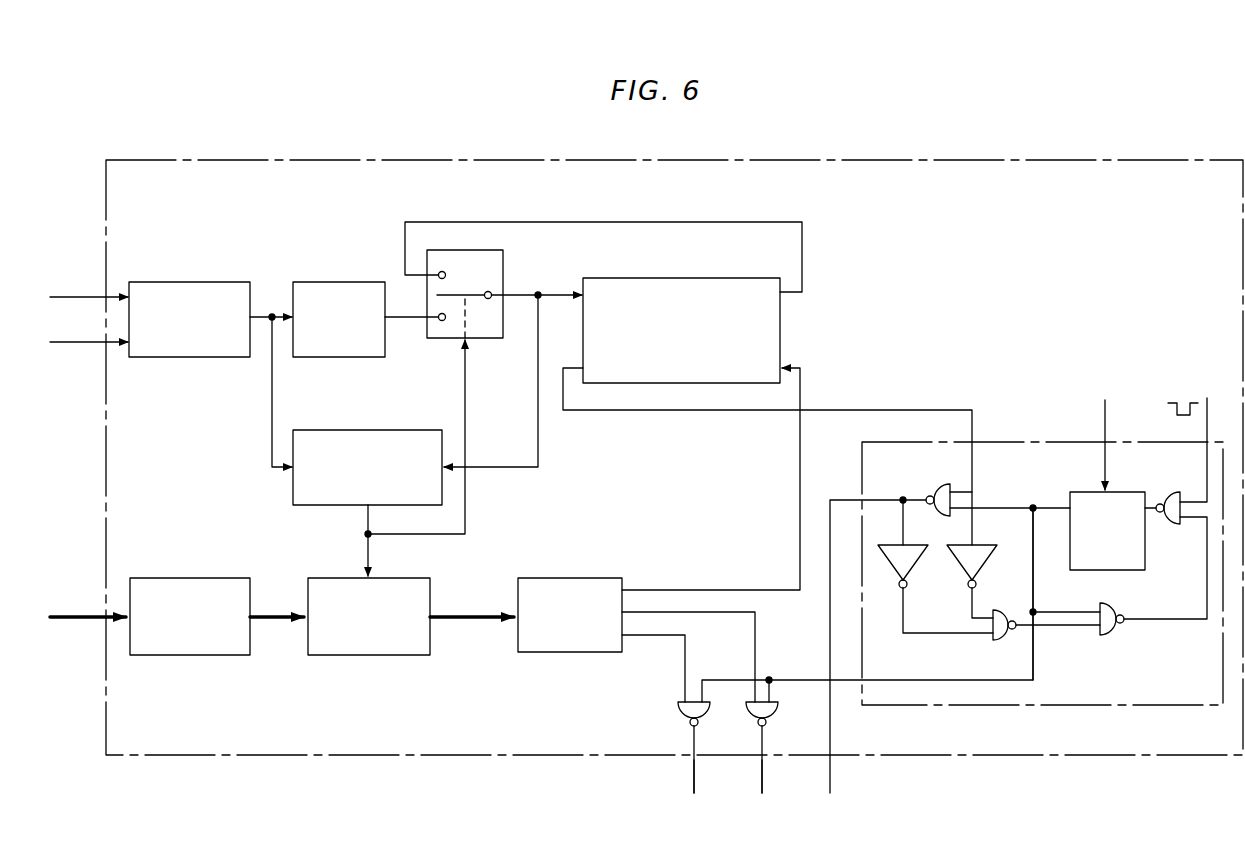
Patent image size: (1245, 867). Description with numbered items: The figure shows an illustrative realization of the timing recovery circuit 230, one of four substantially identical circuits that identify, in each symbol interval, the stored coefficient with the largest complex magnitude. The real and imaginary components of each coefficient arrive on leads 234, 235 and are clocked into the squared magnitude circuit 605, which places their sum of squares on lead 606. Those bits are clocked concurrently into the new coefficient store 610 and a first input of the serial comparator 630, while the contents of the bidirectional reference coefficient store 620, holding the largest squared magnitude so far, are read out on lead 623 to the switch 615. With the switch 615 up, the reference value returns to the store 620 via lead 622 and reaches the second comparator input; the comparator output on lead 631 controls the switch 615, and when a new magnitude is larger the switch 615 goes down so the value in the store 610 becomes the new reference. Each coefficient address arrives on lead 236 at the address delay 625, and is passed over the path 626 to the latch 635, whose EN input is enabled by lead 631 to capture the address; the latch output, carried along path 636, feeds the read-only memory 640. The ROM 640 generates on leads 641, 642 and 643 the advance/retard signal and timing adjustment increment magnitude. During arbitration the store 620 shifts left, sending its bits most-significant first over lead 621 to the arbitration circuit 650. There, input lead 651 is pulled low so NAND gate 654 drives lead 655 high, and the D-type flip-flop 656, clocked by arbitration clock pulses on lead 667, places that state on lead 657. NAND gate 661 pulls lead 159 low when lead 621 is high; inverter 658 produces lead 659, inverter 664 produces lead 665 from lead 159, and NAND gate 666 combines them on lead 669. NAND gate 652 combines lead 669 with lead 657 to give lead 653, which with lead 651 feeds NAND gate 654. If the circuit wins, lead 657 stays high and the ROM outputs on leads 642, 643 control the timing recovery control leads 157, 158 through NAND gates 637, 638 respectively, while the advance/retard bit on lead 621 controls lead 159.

The timing recovery circuit 230 is at (990, 160).
The lead 234 is at (71, 296).
The lead 235 is at (75, 345).
The lead 236 is at (76, 622).
The squared magnitude circuit 605 is at (183, 280).
The lead 606 is at (259, 308).
The new coefficient store 610 is at (333, 280).
The switch 615 is at (504, 261).
The reference coefficient store 620 is at (683, 293).
The lead 621 is at (896, 412).
The lead 622 is at (508, 293).
The lead 623 is at (596, 222).
The address delay 625 is at (187, 587).
The address delay output line 626 is at (282, 622).
The serial comparator 630 is at (366, 430).
The lead 631 is at (364, 521).
The latch 635 is at (371, 655).
The latch output line 636 is at (474, 622).
The NAND gate 637 is at (668, 725).
The NAND gate 638 is at (778, 710).
The read-only memory (ROM) 640 is at (567, 577).
The lead 641 is at (690, 589).
The lead 642 is at (670, 658).
The lead 643 is at (741, 658).
The arbitration circuit 650 is at (1026, 708).
The input lead 651 is at (1202, 423).
The NAND gate 652 is at (1113, 626).
The lead 653 is at (1164, 621).
The NAND gate 654 is at (1168, 530).
The lead 655 is at (1165, 500).
The D-type flip-flop 656 is at (1105, 570).
The lead 657 is at (1041, 504).
The inverter 658 is at (988, 558).
The lead 659 is at (970, 608).
The NAND gate 661 is at (945, 484).
The inverter 664 is at (920, 558).
The lead 665 is at (900, 638).
The NAND gate 666 is at (1000, 650).
The lead 667 is at (1104, 424).
The lead 669 is at (1074, 632).
The timing recovery control lead 157 is at (691, 776).
The timing recovery control lead 158 is at (758, 776).
The timing recovery control lead 159 is at (826, 776).